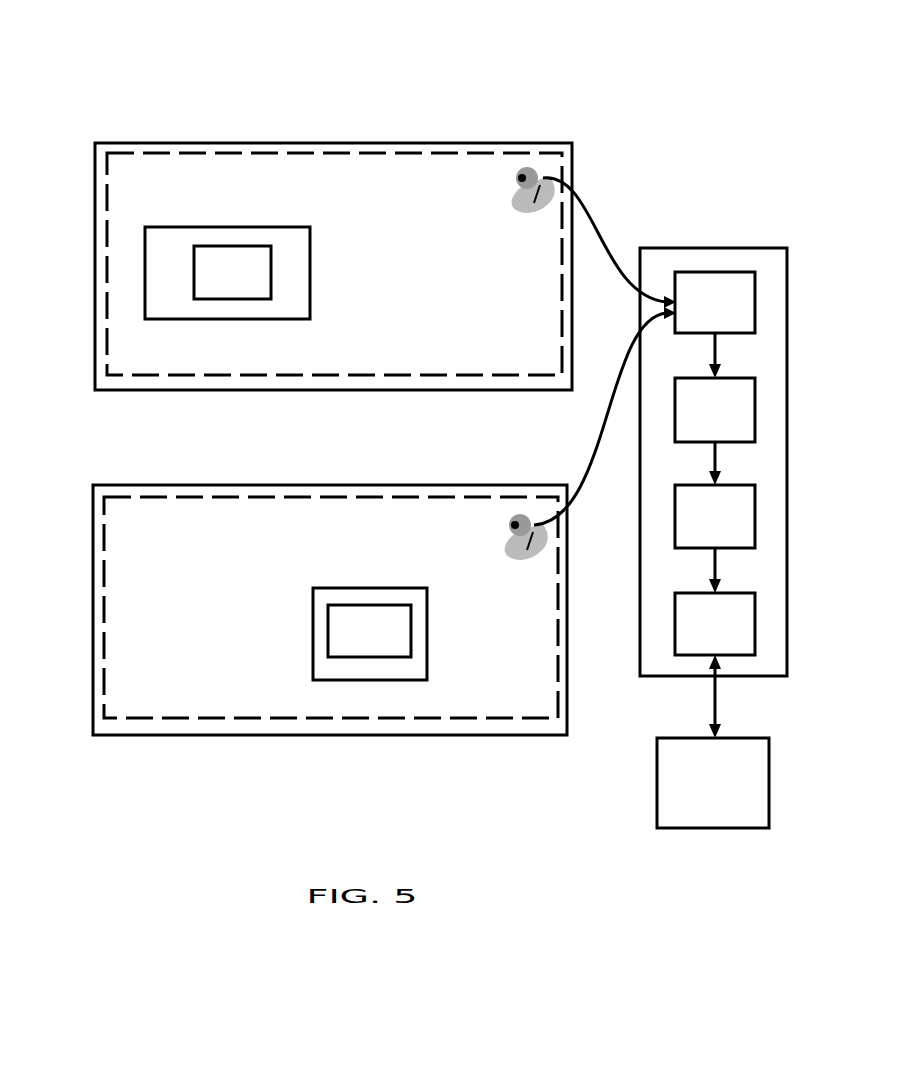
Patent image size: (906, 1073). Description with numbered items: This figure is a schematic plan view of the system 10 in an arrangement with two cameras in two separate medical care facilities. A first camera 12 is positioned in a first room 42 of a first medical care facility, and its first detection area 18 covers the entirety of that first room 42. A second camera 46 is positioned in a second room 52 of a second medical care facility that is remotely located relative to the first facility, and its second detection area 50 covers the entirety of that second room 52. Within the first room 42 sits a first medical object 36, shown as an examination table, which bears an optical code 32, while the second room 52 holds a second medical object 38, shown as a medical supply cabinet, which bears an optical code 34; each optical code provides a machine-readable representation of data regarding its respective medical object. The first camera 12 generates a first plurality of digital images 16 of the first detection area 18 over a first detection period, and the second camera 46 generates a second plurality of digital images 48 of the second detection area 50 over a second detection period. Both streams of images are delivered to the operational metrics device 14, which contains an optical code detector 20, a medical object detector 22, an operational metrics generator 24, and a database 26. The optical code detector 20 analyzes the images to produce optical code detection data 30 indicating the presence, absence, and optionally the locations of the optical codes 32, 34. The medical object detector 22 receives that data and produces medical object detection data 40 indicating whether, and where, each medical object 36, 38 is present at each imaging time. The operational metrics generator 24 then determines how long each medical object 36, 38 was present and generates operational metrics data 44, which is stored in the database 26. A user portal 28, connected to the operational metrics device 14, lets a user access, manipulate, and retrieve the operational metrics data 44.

The system 10 is at (208, 70).
The first camera 12 is at (511, 195).
The operational metrics device 14 is at (680, 248).
The first plurality of digital images 16 is at (600, 210).
The first detection area 18 is at (108, 327).
The optical code detector 20 is at (715, 302).
The medical object detector 22 is at (715, 410).
The operational metrics generator 24 is at (715, 516).
The database 26 is at (715, 624).
The user portal 28 is at (713, 783).
The optical code detection data 30 is at (717, 358).
The optical code 32 is at (232, 272).
The optical code 34 is at (369, 631).
The first medical object 36 is at (198, 227).
The second medical object 38 is at (355, 588).
The medical object detection data 40 is at (717, 465).
The first room 42 is at (95, 200).
The operational metrics data 44 is at (717, 570).
The second camera 46 is at (508, 540).
The second plurality of digital images 48 is at (598, 512).
The second detection area 50 is at (106, 672).
The second room 52 is at (93, 545).